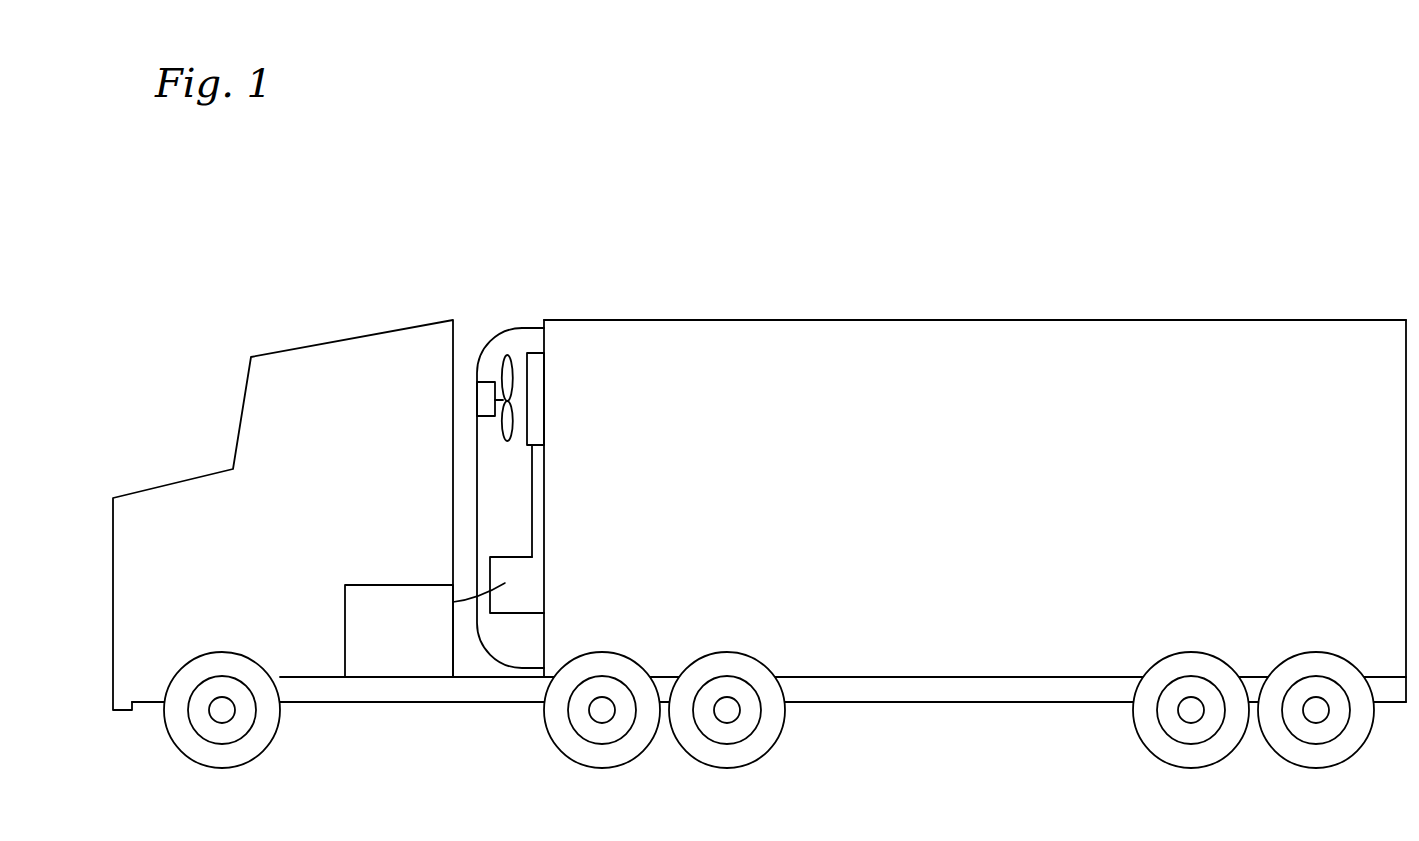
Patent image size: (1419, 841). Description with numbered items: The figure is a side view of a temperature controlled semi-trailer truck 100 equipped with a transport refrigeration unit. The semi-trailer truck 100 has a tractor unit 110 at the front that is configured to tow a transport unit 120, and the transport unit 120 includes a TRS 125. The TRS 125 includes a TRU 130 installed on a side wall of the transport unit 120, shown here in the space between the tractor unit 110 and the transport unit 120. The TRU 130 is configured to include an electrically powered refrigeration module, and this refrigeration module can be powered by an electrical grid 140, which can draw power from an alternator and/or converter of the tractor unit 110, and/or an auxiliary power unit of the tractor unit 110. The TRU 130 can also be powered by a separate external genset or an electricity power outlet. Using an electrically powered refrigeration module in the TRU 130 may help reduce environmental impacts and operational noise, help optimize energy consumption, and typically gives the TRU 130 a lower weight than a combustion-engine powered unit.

The semi-trailer truck 100 is at (1017, 170).
The tractor unit 110 is at (327, 339).
The transport unit 120 is at (1177, 320).
The TRS 125 is at (837, 319).
The TRU 130 is at (502, 330).
The electrical grid 140 is at (408, 662).